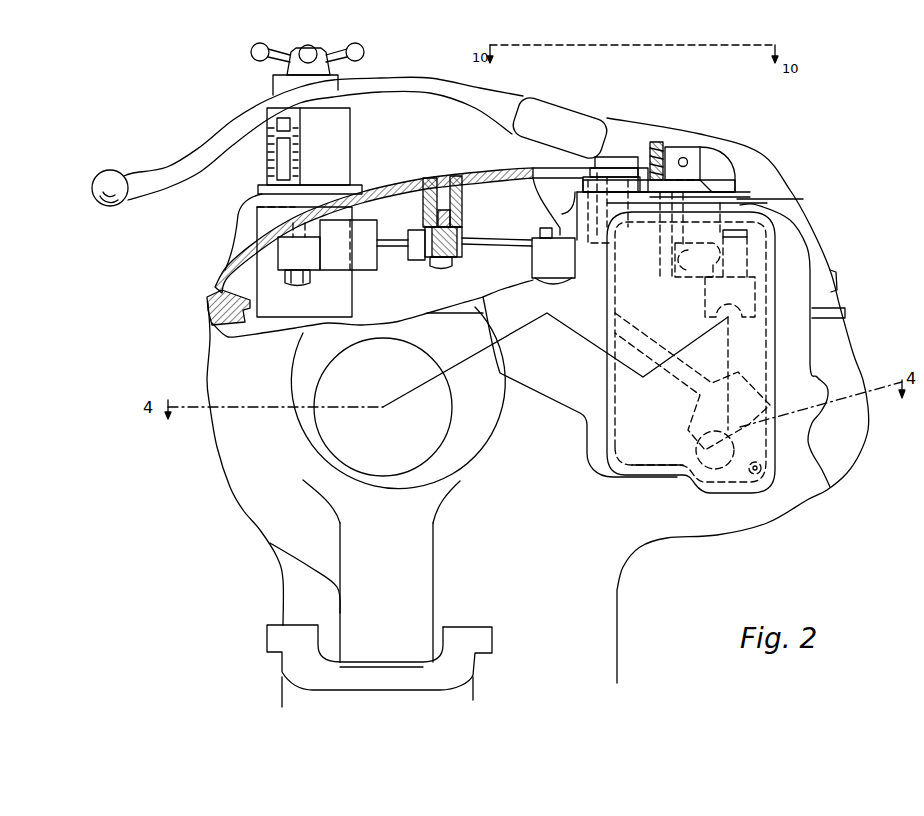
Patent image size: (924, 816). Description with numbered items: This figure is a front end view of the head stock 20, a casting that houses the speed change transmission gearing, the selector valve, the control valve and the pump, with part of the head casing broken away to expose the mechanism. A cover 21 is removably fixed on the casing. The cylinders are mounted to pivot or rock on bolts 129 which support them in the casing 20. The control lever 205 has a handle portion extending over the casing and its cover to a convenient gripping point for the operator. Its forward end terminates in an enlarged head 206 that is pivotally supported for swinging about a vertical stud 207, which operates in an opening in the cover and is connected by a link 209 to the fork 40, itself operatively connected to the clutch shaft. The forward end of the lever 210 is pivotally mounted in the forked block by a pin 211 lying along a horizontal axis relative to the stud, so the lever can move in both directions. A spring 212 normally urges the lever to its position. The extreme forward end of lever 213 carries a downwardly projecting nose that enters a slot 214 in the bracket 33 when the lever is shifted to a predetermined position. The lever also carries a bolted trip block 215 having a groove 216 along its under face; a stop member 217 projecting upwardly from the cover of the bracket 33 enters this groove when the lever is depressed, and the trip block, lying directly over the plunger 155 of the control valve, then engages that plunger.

The head stock 20 is at (230, 472).
The cover 21 is at (386, 180).
The bracket 33 is at (670, 462).
The fork 40 is at (750, 298).
The bolts 129 is at (442, 175).
The plunger 155 is at (590, 170).
The control lever 205 is at (412, 88).
The head 206 is at (573, 108).
The stud 207 is at (805, 199).
The link 209 is at (705, 258).
The forward end of the lever 210 is at (690, 148).
The pin 211 is at (690, 162).
The spring 212 is at (667, 147).
The extreme forward end of lever 213 is at (724, 172).
The slot 214 is at (740, 194).
The trip block 215 is at (610, 160).
The groove 216 is at (618, 237).
The stop member 217 is at (641, 160).